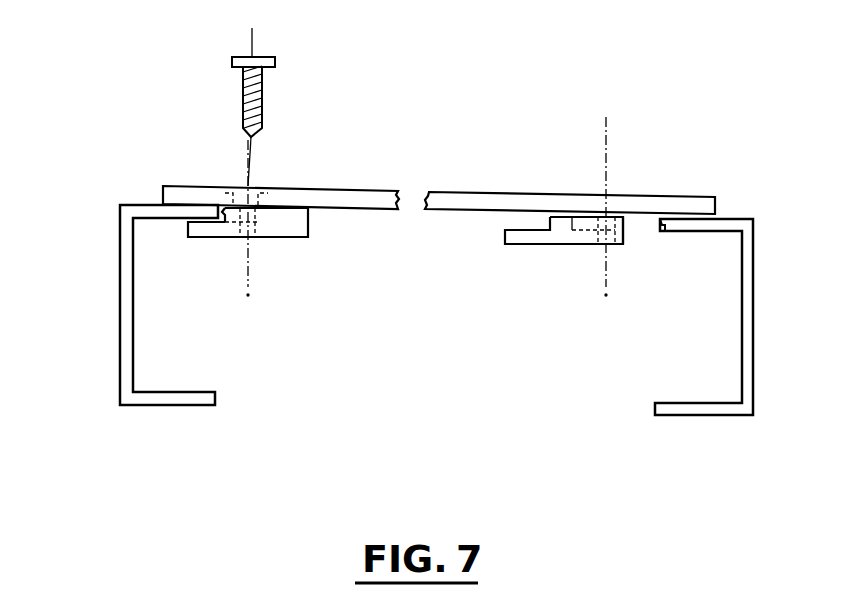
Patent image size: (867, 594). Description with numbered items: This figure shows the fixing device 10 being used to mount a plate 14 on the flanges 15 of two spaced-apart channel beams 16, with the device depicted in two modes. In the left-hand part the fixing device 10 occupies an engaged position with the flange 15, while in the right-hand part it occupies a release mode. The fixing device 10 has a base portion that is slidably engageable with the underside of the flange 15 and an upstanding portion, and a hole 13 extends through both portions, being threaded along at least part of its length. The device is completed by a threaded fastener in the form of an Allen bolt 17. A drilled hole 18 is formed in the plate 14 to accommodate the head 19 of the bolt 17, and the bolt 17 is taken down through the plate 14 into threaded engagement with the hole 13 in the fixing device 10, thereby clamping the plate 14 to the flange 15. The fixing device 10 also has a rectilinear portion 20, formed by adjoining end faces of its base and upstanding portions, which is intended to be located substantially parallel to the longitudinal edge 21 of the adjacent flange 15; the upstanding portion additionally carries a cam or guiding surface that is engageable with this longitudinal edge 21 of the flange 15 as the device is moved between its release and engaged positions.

The fixing device 10 is at (428, 204).
The hole 13 is at (245, 236).
The plate 14 is at (439, 146).
The flange 15 is at (431, 243).
The channel beam 16 is at (118, 298).
The Allen bolt 17 is at (294, 102).
The drilled hole 18 is at (270, 193).
The head 19 is at (265, 60).
The rectilinear portion 20 is at (623, 235).
The longitudinal edge 21 is at (230, 210).